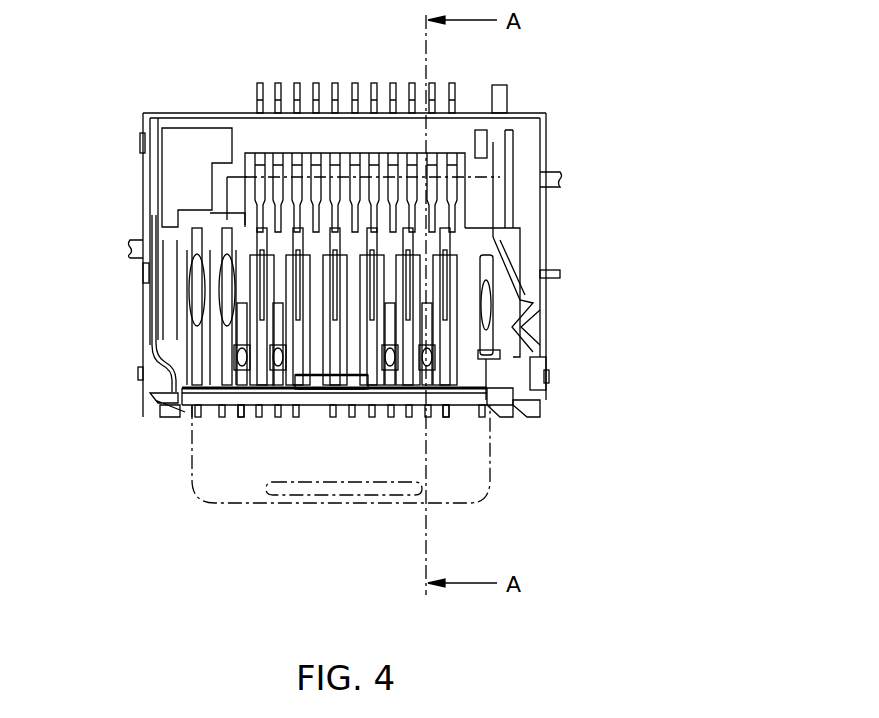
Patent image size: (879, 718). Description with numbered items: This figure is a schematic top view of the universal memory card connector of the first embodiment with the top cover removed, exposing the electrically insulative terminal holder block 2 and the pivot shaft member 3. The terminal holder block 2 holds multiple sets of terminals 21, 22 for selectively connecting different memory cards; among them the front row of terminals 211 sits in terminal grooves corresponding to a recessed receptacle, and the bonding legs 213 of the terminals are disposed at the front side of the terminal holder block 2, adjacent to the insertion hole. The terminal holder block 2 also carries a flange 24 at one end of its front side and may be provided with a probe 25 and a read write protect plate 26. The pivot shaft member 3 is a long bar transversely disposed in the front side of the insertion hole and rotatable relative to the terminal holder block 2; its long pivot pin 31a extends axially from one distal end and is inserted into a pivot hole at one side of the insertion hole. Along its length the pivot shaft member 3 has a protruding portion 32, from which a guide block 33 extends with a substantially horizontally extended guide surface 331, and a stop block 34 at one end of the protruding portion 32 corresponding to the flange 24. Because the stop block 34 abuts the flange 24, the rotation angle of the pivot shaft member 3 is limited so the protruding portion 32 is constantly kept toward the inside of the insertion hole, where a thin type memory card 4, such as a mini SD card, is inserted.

The terminal holder block 2 is at (143, 172).
The terminals 21 is at (447, 245).
The front row of terminals 211 is at (443, 402).
The bonding legs 213 is at (240, 412).
The terminals 22 is at (450, 185).
The flange 24 is at (175, 393).
The probe 25 is at (540, 318).
The read write protect plate 26 is at (152, 345).
The pivot shaft member 3 is at (192, 412).
The long pivot pin 31a is at (500, 402).
The protruding portion 32 is at (360, 406).
The guide block 33 is at (282, 395).
The guide surface 331 is at (325, 390).
The stop block 34 is at (160, 393).
The thin type memory card 4 is at (192, 455).